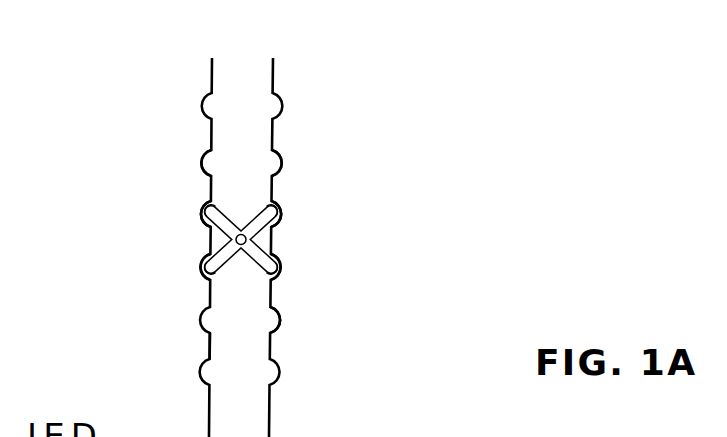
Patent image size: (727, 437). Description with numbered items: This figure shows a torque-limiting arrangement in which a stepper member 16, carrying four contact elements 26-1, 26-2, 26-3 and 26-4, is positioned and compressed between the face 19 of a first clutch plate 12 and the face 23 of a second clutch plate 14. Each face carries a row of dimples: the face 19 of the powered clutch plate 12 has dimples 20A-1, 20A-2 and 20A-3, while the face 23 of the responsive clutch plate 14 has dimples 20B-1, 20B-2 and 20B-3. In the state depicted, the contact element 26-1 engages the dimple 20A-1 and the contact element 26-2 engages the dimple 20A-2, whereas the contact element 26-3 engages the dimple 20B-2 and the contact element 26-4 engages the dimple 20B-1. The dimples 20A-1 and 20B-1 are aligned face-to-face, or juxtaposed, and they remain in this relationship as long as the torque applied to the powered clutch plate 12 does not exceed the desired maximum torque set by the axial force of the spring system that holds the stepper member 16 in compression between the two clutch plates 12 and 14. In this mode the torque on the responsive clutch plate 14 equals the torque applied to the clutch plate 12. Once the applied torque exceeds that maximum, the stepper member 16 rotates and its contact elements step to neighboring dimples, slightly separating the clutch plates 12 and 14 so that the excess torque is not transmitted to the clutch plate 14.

The clutch plate 12 is at (192, 92).
The clutch plate 14 is at (308, 93).
The stepper member 16 is at (257, 275).
The face 19 is at (207, 345).
The dimple 20A-1 is at (207, 275).
The dimple 20A-2 is at (205, 203).
The dimple 20A-3 is at (202, 157).
The dimple 20B-1 is at (281, 265).
The dimple 20B-2 is at (281, 203).
The dimple 20B-3 is at (282, 155).
The face 23 is at (281, 320).
The contact element 26-1 is at (205, 263).
The contact element 26-2 is at (204, 217).
The contact element 26-3 is at (280, 223).
The contact element 26-4 is at (280, 270).